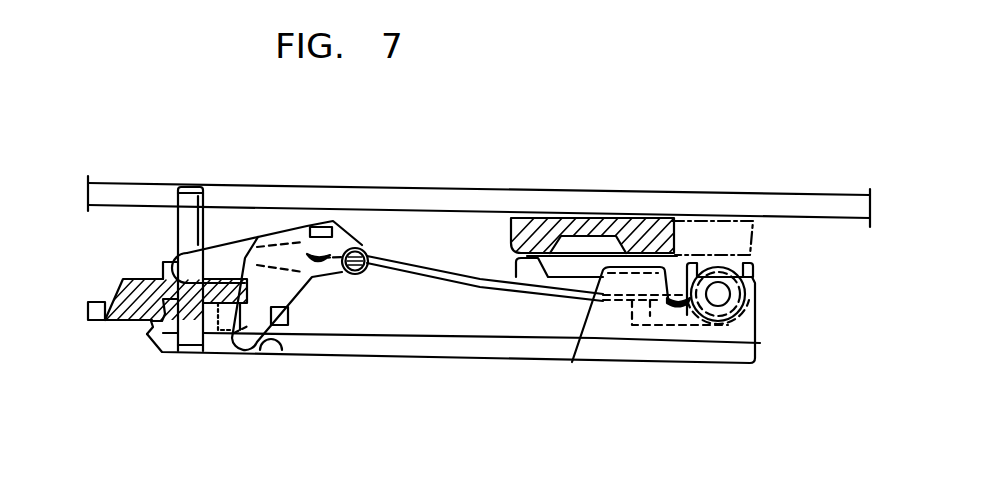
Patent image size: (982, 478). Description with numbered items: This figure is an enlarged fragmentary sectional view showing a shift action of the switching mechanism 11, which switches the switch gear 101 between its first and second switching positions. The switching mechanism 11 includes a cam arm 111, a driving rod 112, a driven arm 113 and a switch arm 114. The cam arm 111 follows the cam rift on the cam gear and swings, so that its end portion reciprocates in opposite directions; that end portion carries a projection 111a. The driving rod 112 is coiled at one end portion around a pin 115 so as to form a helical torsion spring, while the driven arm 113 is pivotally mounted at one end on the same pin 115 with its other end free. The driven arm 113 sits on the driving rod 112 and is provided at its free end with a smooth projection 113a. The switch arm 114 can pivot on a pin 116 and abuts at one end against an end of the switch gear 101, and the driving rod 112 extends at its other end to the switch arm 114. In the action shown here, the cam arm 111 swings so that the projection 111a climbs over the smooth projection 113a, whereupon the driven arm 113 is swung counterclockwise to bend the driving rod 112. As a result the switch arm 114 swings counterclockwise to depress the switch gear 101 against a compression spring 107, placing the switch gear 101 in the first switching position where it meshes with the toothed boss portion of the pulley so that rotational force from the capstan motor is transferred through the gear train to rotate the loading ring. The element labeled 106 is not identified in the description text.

The switching mechanism 11 is at (480, 322).
The switch gear 101 is at (108, 322).
The post 106 is at (178, 207).
The compression spring 107 is at (140, 340).
The cam arm 111 is at (598, 222).
The projection 111a is at (535, 226).
The driving rod 112 is at (447, 290).
The driven arm 113 is at (690, 280).
The smooth projection 113a is at (527, 253).
The switch arm 114 is at (258, 318).
The pin 115 is at (728, 291).
The pin 116 is at (358, 247).